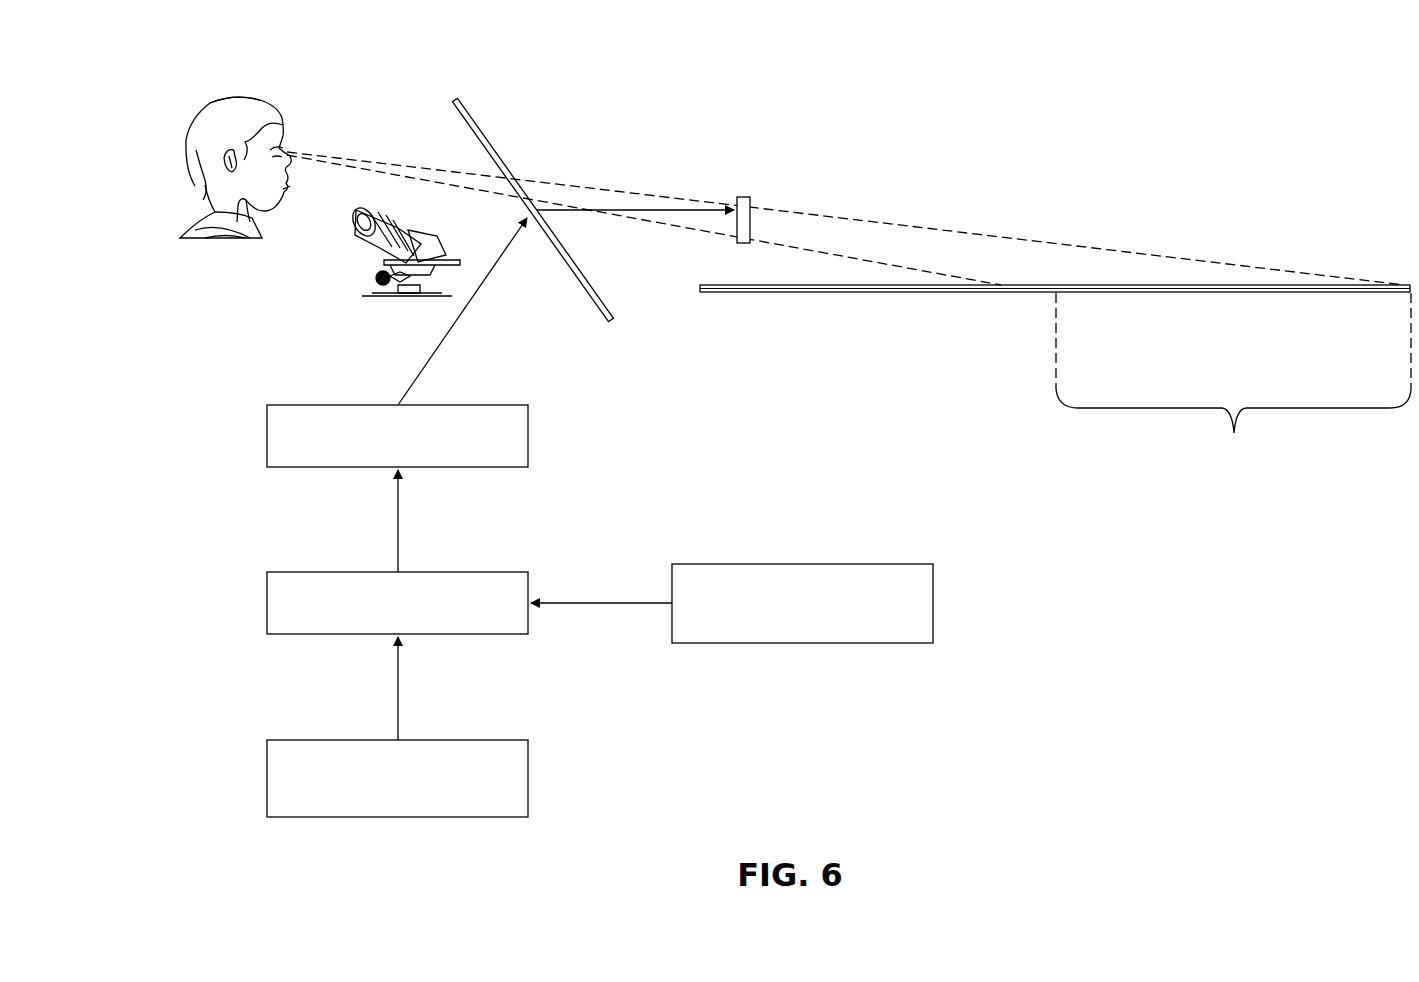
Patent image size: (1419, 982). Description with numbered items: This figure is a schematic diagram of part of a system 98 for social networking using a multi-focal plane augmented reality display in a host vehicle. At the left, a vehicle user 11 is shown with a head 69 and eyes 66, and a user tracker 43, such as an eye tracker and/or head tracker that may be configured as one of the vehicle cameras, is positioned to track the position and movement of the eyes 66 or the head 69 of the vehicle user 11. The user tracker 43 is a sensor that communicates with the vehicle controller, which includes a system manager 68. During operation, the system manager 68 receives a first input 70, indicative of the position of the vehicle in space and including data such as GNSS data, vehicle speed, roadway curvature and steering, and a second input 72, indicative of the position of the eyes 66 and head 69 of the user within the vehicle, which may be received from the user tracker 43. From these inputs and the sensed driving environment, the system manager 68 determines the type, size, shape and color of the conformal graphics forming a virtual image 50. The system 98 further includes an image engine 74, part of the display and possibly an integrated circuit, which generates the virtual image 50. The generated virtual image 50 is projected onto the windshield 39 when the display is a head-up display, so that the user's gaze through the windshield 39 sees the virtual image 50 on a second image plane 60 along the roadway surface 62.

The vehicle user 11 is at (190, 134).
The head 69 is at (237, 97).
The eyes 66 is at (288, 190).
The user tracker 43 is at (385, 297).
The windshield 39 is at (465, 107).
The virtual image 50 is at (746, 197).
The roadway surface 62 is at (903, 288).
The second image plane 60 is at (1233, 379).
The system 98 is at (1140, 92).
The image engine 74 is at (528, 437).
The system manager 68 is at (528, 590).
The second input 72 is at (933, 603).
The first input 70 is at (528, 778).